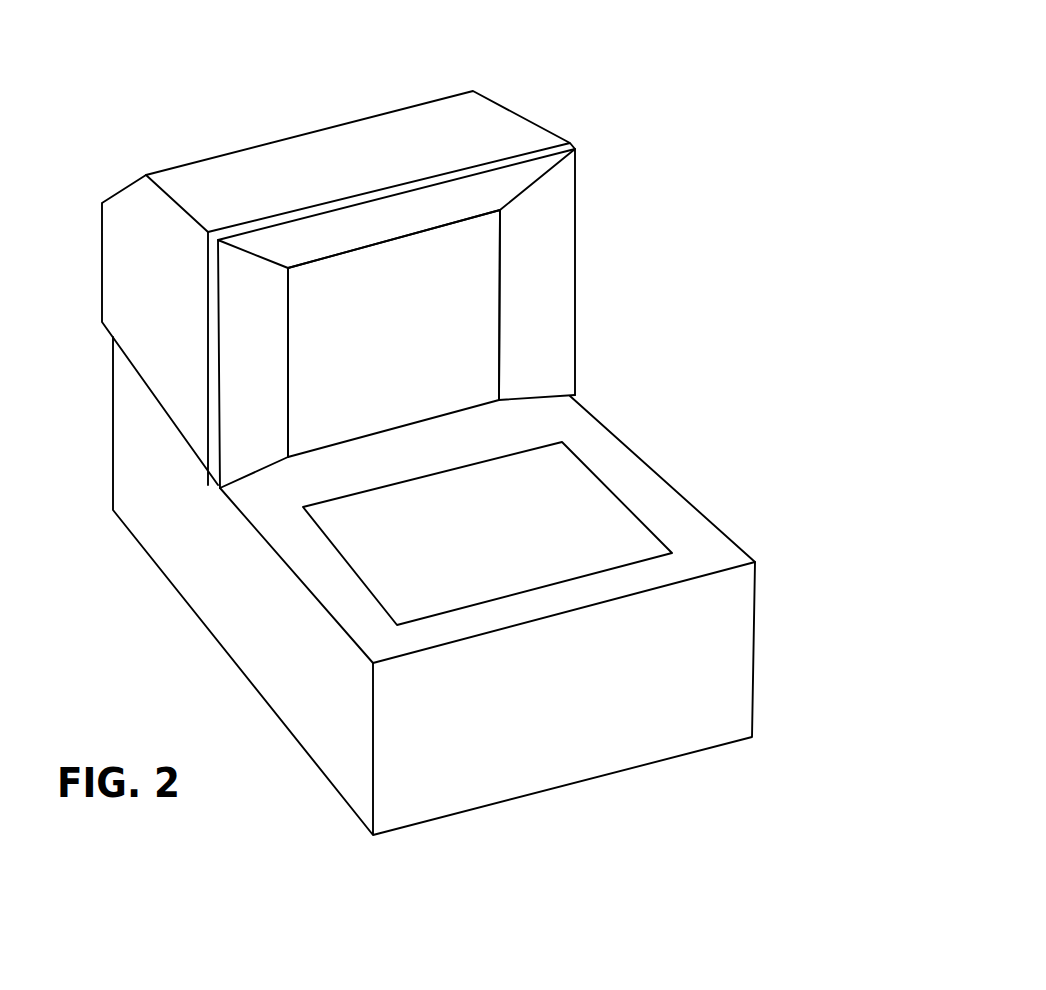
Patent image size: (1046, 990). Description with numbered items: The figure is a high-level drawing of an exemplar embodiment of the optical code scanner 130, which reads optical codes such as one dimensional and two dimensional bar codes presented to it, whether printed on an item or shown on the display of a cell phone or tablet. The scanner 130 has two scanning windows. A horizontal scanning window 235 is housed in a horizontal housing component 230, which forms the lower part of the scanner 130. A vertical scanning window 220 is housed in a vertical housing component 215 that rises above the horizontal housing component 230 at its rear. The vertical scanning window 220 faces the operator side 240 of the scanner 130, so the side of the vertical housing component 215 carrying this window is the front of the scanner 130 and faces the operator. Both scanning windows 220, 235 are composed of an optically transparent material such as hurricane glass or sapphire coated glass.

The optical code scanner 130 is at (135, 63).
The vertical housing component 215 is at (492, 122).
The vertical scanning window 220 is at (450, 285).
The horizontal housing component 230 is at (625, 467).
The horizontal scanning window 235 is at (635, 533).
The operator side 240 is at (582, 658).